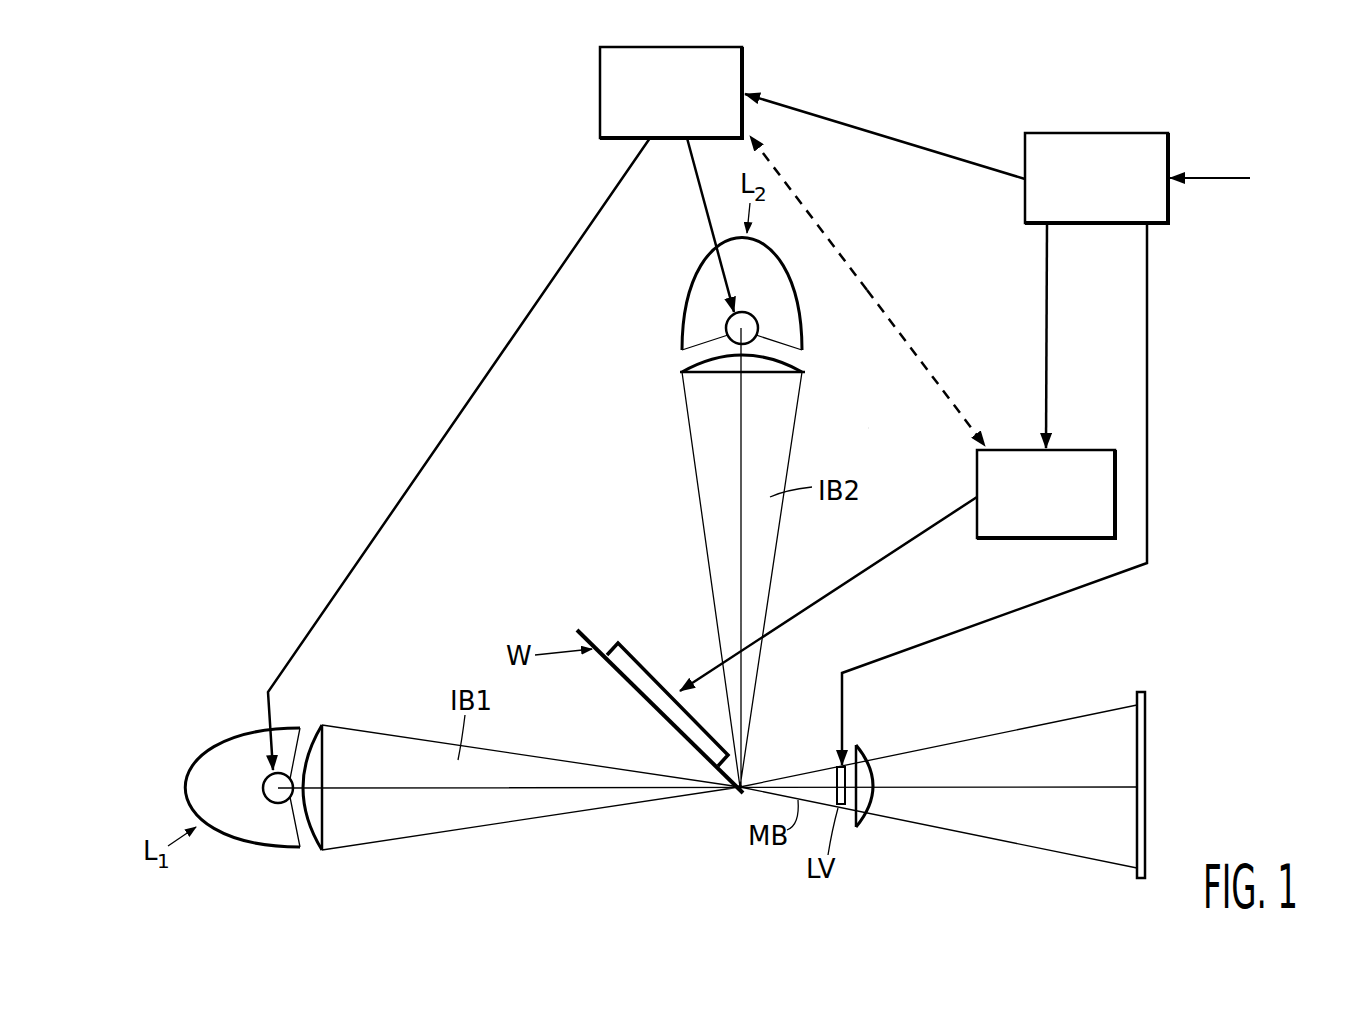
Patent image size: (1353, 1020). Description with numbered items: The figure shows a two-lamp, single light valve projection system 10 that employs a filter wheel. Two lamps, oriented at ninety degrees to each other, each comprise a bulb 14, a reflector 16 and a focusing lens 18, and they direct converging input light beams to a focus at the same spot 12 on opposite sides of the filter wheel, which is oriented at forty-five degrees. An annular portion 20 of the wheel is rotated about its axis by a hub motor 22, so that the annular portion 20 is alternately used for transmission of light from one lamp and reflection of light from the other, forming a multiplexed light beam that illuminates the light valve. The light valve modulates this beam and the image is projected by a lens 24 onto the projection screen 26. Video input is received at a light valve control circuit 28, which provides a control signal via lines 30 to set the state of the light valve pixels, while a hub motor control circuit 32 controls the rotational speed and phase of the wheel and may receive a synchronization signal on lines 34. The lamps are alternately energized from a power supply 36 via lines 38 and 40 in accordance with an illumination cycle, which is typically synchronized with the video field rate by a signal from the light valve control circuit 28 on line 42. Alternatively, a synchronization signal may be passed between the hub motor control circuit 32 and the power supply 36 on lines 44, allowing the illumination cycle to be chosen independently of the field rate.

The system 10 is at (870, 428).
The spot 12 is at (735, 798).
The bulb 14 is at (268, 778).
The reflector 16 is at (205, 748).
The focusing lens 18 is at (325, 752).
The annular portion 20 is at (590, 637).
The hub motor 22 is at (635, 655).
The lens 24 is at (863, 747).
The projection screen 26 is at (1135, 727).
The light valve control circuit 28 is at (1047, 133).
The lines 30 is at (1148, 278).
The hub motor control circuit 32 is at (1068, 450).
The lines 34 is at (1045, 278).
The power supply 36 is at (600, 78).
The line 38 is at (700, 197).
The line 40 is at (445, 437).
The line 42 is at (813, 110).
The lines 44 is at (865, 263).